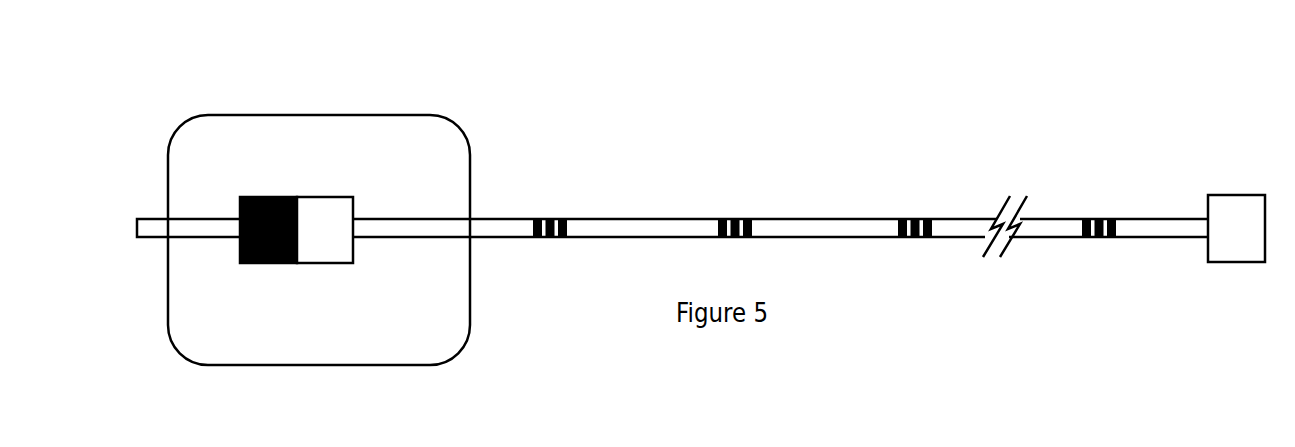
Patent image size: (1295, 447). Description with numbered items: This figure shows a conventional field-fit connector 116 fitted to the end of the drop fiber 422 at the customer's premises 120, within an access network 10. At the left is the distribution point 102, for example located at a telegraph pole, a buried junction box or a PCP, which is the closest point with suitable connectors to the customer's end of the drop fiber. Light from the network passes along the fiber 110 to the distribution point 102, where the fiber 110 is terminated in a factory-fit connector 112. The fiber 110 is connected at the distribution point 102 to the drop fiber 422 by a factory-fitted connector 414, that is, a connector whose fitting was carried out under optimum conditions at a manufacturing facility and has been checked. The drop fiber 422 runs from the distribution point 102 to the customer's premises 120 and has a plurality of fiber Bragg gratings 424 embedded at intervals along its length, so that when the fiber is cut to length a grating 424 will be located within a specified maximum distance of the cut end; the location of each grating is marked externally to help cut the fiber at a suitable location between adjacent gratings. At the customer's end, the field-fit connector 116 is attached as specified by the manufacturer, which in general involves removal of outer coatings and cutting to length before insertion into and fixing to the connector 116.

The access network 10 is at (832, 93).
The distribution point 102 is at (319, 228).
The fiber 110 is at (303, 242).
The factory-fit connector 112 is at (268, 215).
The factory-fitted connector 414 is at (325, 215).
The drop fiber 422 is at (839, 231).
The fiber Bragg gratings 424 is at (824, 215).
The field-fit connector 116 is at (1236, 214).
The customer's premises 120 is at (1217, 126).